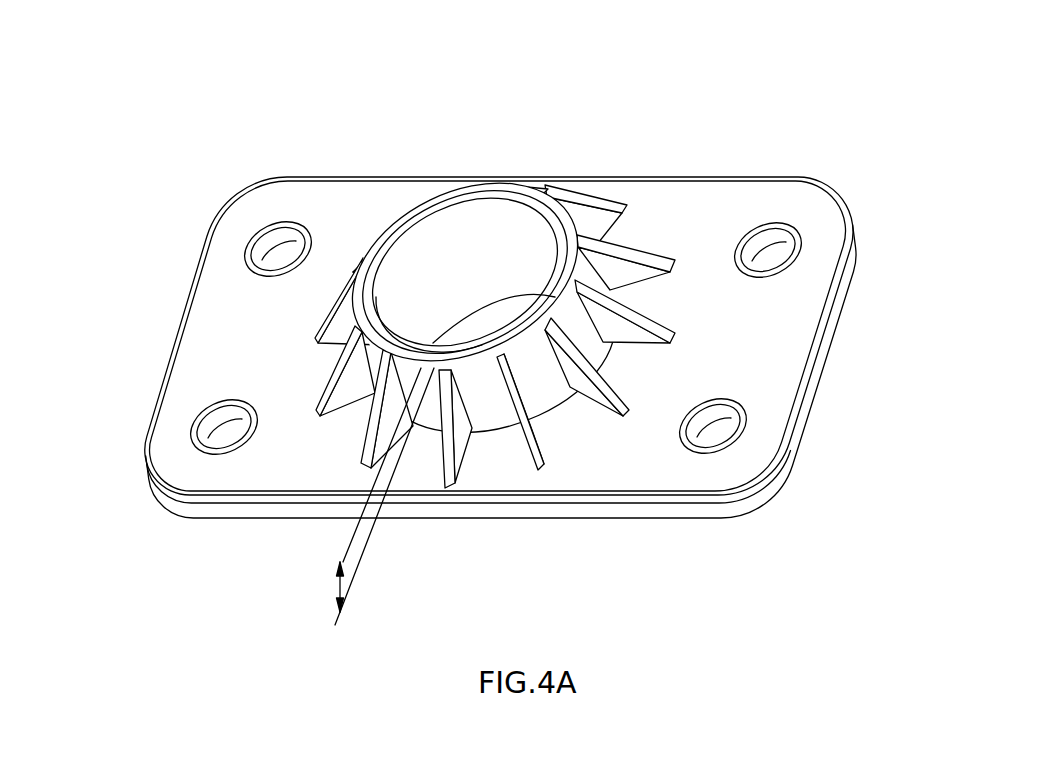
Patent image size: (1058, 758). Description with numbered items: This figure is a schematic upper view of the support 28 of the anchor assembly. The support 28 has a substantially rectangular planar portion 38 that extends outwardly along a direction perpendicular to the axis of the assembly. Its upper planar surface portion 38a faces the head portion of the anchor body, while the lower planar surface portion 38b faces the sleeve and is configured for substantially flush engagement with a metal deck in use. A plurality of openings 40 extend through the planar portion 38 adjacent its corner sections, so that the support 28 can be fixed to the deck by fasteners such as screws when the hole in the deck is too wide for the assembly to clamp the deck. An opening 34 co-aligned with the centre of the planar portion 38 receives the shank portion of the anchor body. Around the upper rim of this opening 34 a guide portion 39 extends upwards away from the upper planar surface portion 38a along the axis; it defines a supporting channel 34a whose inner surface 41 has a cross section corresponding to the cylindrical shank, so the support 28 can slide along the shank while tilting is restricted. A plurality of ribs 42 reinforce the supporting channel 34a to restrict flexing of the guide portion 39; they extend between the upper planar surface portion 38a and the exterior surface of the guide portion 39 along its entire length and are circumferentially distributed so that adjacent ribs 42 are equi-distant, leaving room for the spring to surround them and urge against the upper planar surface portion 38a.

The support 28 is at (498, 338).
The opening 34 is at (469, 282).
The supporting channel 34a is at (342, 586).
The planar portion 38 is at (498, 362).
The upper planar surface portion 38a is at (213, 477).
The lower planar surface portion 38b is at (803, 497).
The guide portion 39 is at (485, 398).
The openings 40 is at (777, 237).
The inner surface 41 is at (438, 223).
The ribs 42 is at (495, 393).